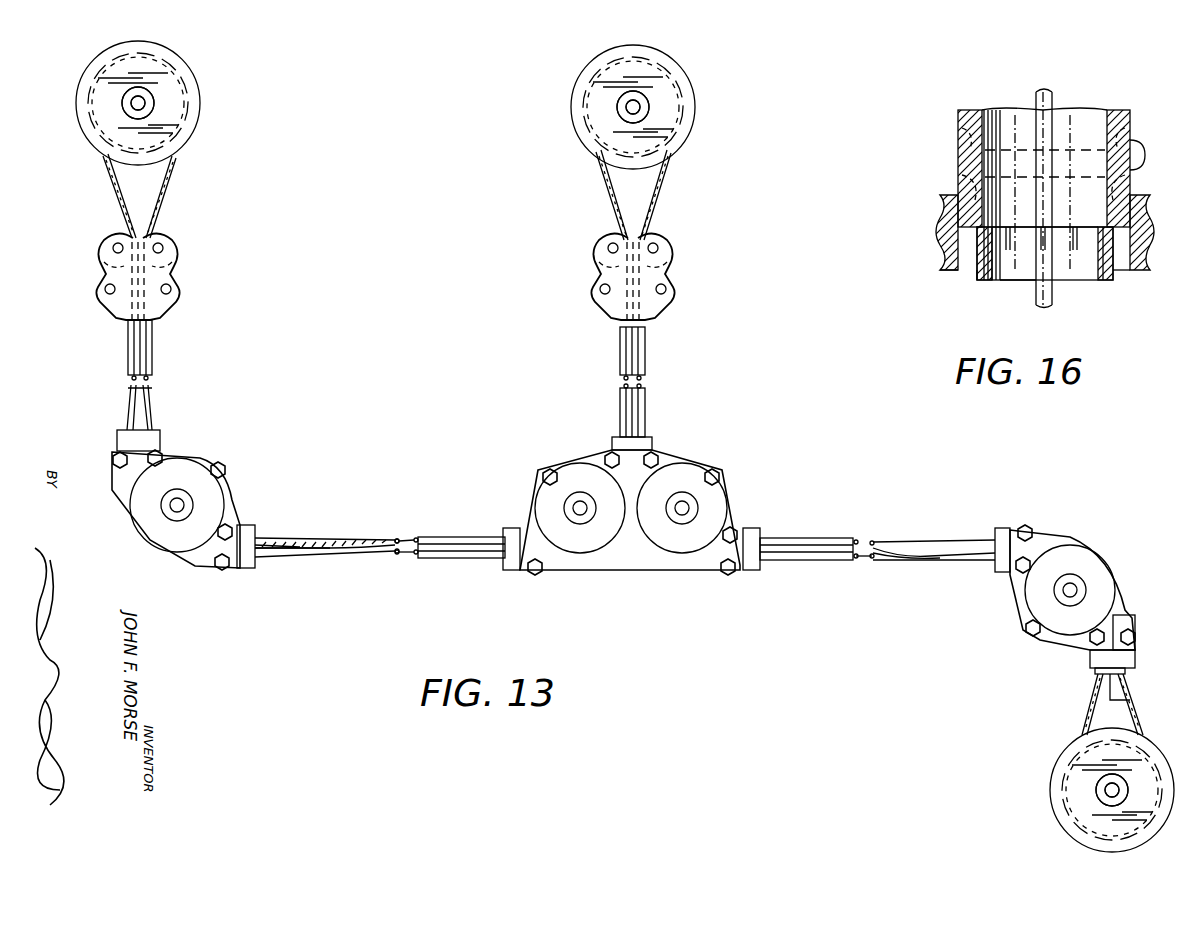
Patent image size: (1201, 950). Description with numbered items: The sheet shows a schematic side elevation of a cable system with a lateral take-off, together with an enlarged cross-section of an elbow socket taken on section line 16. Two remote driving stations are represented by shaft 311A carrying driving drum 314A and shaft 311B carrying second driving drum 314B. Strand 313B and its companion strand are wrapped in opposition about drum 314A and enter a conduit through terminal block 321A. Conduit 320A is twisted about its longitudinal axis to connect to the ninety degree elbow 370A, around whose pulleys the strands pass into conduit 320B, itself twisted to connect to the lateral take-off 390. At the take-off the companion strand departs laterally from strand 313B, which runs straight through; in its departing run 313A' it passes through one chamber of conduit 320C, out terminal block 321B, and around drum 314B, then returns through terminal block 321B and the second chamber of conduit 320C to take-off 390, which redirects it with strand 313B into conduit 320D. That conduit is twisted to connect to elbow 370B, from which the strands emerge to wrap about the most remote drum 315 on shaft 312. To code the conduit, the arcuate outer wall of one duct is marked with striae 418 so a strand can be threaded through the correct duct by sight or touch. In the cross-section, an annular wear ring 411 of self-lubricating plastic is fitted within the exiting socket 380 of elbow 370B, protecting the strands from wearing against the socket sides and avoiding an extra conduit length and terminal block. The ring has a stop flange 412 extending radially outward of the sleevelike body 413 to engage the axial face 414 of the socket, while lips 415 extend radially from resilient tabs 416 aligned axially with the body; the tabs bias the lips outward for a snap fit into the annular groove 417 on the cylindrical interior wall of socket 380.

In FIG. 13, the driving drum 314A is at (193, 63).
In FIG. 13, the shaft 311A is at (143, 103).
In FIG. 16, the cable strand 313B is at (1055, 96).
In FIG. 13, the terminal block 321A is at (178, 272).
In FIG. 13, the conduit 320A is at (152, 355).
In FIG. 13, the 90° elbow 370A is at (197, 449).
In FIG. 13, the conduit 320B is at (312, 534).
In FIG. 13, the striae 418 is at (302, 550).
In FIG. 13, the lateral take-off 390 is at (612, 570).
In FIG. 13, the conduit 320C is at (620, 352).
In FIG. 13, the departing lateral run of strand 313A' is at (567, 273).
In FIG. 13, the second driving drum 314B is at (578, 79).
In FIG. 13, the shaft 311B is at (638, 107).
In FIG. 13, the terminal block 321B is at (672, 277).
In FIG. 13, the conduit 320D is at (828, 532).
In FIG. 13, the elbow 370B is at (1077, 547).
In FIG. 16, the elbow 370B is at (960, 119).
In FIG. 13, the section line 16— 16 is at (1133, 618).
In FIG. 13, the annular wear ring 411 is at (1128, 672).
In FIG. 16, the annular wear ring 411 is at (1103, 283).
In FIG. 13, the drum 315 is at (1050, 773).
In FIG. 13, the shaft 312 is at (1108, 793).
In FIG. 16, the socket 380 is at (995, 200).
In FIG. 16, the resilient tabs 416 is at (1028, 237).
In FIG. 16, the lips 415 is at (985, 240).
In FIG. 16, the axial face 414 is at (950, 273).
In FIG. 16, the stop flange 412 is at (975, 277).
In FIG. 16, the sleevelike body 413 is at (1025, 268).
In FIG. 16, the annular groove 417 is at (1112, 266).